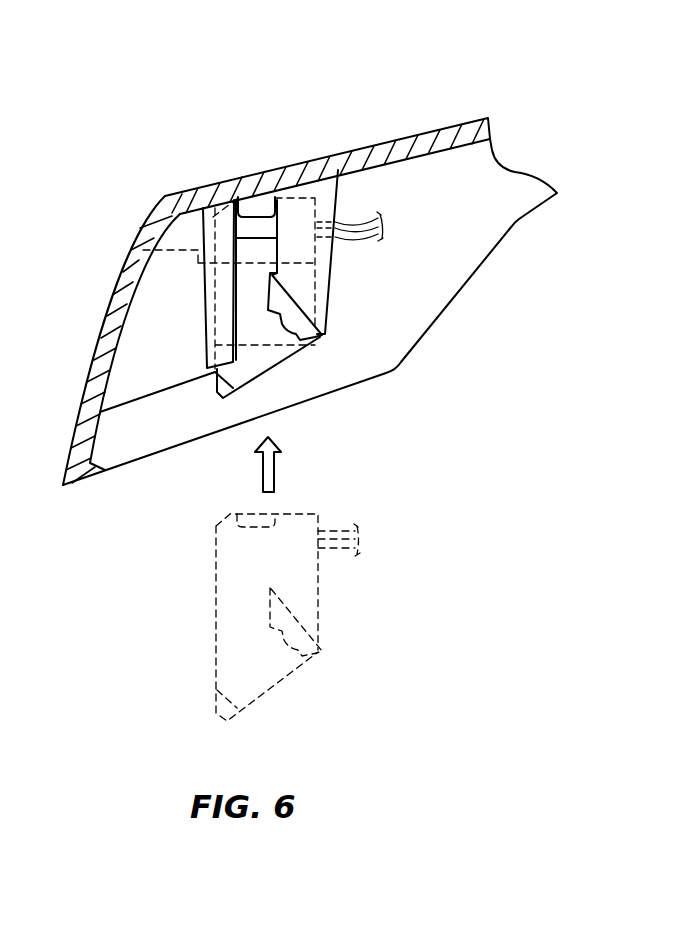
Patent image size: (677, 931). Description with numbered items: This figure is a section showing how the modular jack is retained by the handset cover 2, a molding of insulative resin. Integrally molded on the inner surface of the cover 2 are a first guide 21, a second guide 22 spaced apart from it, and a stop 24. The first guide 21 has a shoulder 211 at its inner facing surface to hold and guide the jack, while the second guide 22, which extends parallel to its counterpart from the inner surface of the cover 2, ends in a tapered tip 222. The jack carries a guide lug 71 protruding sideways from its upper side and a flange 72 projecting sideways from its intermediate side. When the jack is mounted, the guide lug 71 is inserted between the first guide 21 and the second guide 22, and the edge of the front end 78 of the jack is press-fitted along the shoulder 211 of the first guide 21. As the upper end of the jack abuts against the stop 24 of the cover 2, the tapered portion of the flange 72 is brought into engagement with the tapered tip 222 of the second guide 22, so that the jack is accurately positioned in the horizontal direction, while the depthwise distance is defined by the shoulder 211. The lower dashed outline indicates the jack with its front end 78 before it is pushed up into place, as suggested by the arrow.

The handset cover 2 is at (458, 125).
The second guide 22 is at (333, 153).
The first guide 21 is at (213, 200).
The stop 24 is at (252, 198).
The guide lug 71 is at (262, 200).
The flange 72 is at (452, 290).
The shoulder 211 is at (215, 285).
The tapered tip 222 is at (452, 290).
The front end 78 is at (215, 610).